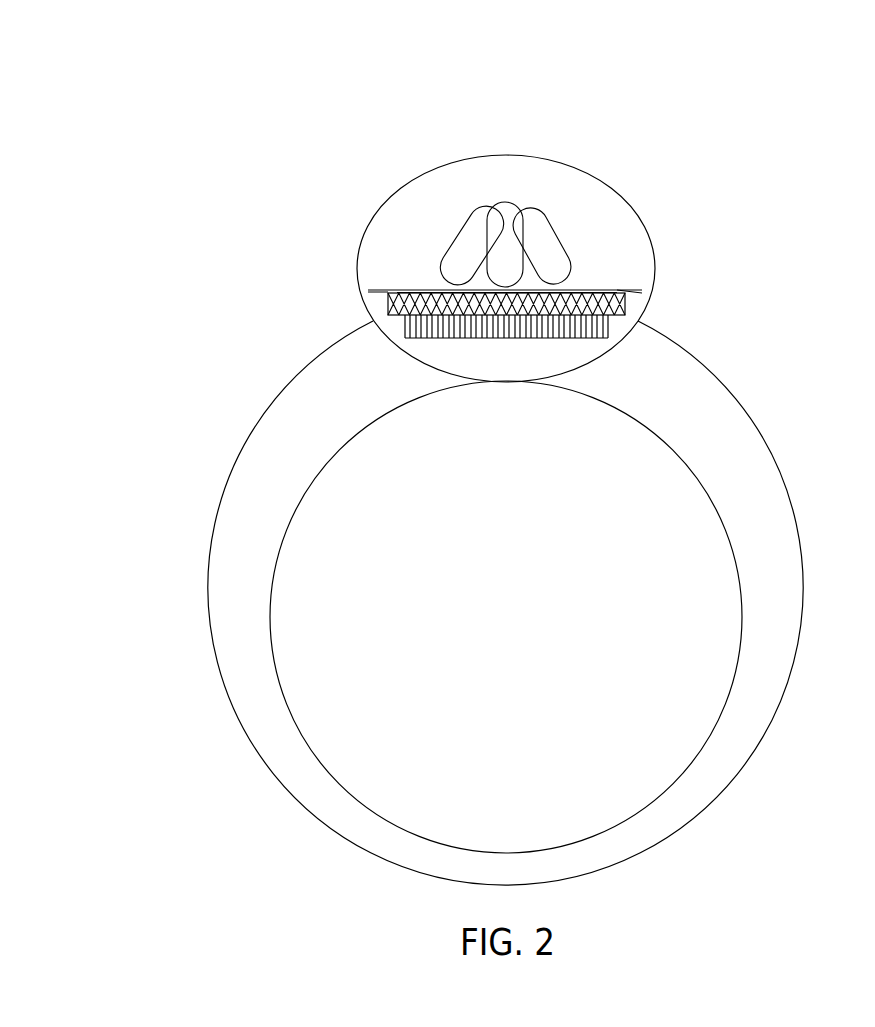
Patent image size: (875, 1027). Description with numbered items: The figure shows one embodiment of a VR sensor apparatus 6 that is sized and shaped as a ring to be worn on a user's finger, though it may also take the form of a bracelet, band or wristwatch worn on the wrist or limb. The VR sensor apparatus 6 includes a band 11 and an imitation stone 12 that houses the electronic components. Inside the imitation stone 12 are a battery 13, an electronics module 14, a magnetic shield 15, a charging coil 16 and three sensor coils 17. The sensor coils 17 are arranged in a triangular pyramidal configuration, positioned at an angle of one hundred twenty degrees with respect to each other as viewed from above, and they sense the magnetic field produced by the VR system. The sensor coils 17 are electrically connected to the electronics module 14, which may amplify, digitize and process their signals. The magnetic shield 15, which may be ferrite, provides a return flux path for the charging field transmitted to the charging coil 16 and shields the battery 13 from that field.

The VR sensor apparatus 6 is at (148, 85).
The band 11 is at (208, 588).
The imitation stone 12 is at (396, 185).
The battery 13 is at (596, 353).
The electronics module 14 is at (385, 313).
The magnetic shield 15 is at (372, 293).
The charging coil 16 is at (598, 275).
The sensor coils 17 is at (519, 193).